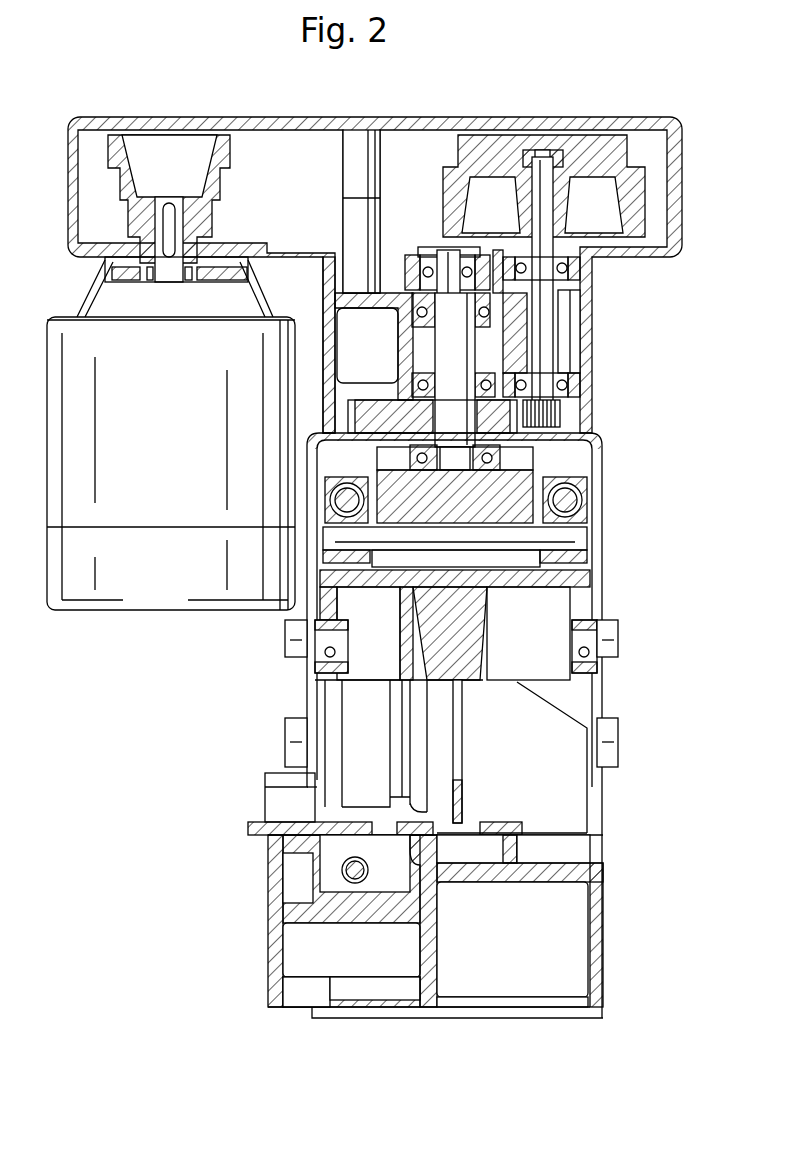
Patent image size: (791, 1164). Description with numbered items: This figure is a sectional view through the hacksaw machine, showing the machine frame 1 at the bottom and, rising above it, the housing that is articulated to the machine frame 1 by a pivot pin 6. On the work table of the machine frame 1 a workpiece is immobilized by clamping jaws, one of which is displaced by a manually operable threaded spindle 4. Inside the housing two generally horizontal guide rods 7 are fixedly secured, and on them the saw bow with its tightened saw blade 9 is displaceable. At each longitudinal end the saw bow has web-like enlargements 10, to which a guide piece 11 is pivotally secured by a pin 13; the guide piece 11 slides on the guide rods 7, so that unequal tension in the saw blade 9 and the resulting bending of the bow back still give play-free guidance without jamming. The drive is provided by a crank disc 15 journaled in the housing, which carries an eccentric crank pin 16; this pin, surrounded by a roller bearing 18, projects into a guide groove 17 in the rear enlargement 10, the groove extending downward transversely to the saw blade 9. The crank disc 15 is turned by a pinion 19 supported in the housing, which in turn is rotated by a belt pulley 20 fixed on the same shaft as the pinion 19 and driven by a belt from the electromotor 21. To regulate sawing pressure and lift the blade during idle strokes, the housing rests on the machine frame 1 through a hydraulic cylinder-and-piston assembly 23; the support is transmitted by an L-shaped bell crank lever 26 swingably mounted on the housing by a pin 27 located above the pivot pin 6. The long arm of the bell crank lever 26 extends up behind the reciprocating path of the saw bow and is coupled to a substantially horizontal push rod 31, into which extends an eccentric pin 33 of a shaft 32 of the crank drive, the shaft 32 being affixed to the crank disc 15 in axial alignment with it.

The machine frame 1 is at (462, 985).
The threaded spindle 4 is at (357, 880).
The pivot pin 6 is at (290, 738).
The guide rods 7 is at (335, 520).
The saw blade 9 is at (463, 792).
The web-like enlargements 10 is at (590, 472).
The guide piece 11 is at (330, 495).
The pin 13 is at (582, 540).
The crank disc 15 is at (375, 405).
The eccentric crank pin 16 is at (525, 483).
The guide groove 17 is at (315, 436).
The roller bearing 18 is at (380, 465).
The pinion 19 is at (565, 420).
The belt pulley 20 is at (632, 140).
The electromotor 21 is at (176, 484).
The hydraulic cylinder-and-piston assembly 23 is at (350, 800).
The L-shaped bell crank lever 26 is at (520, 597).
The pin 27 is at (288, 650).
The push rod 31 is at (405, 270).
The shaft 32 is at (463, 352).
The eccentric pin 33 is at (447, 262).